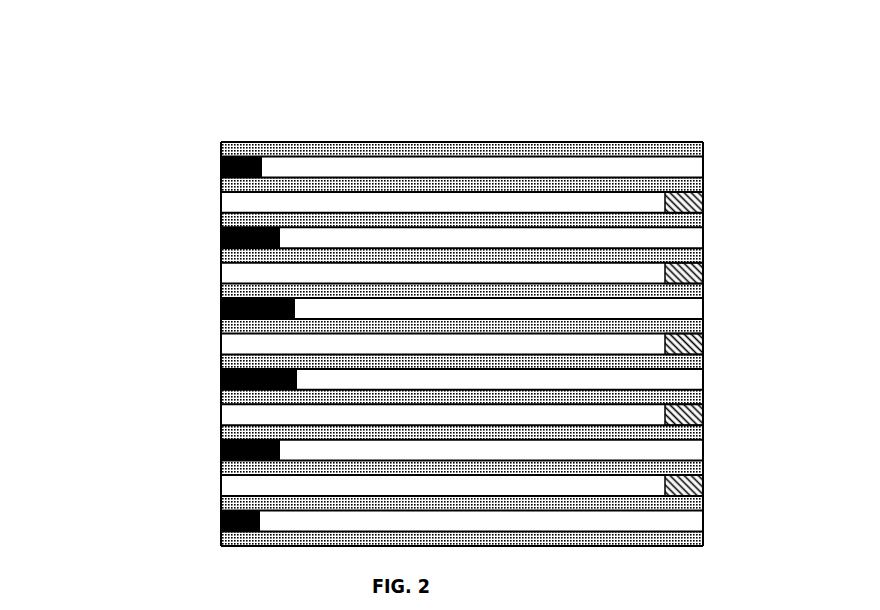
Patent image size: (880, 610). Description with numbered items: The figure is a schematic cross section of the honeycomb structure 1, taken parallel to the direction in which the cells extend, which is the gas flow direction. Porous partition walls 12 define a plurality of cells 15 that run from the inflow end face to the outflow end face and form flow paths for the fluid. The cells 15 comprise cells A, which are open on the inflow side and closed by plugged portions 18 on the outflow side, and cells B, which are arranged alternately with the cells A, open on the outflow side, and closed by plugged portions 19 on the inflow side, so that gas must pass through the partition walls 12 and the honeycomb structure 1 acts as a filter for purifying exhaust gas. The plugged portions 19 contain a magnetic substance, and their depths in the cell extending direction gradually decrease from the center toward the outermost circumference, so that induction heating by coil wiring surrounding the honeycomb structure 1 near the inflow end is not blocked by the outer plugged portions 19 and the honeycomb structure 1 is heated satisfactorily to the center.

The honeycomb structure 1 is at (386, 103).
The partition walls 12 is at (537, 187).
The plugged portions of the cells B 19 is at (221, 240).
The plugged portions of the cells A 18 is at (704, 206).
The cells 15 is at (221, 311).